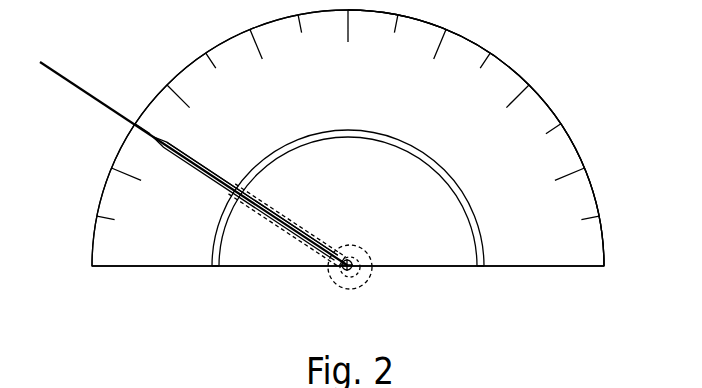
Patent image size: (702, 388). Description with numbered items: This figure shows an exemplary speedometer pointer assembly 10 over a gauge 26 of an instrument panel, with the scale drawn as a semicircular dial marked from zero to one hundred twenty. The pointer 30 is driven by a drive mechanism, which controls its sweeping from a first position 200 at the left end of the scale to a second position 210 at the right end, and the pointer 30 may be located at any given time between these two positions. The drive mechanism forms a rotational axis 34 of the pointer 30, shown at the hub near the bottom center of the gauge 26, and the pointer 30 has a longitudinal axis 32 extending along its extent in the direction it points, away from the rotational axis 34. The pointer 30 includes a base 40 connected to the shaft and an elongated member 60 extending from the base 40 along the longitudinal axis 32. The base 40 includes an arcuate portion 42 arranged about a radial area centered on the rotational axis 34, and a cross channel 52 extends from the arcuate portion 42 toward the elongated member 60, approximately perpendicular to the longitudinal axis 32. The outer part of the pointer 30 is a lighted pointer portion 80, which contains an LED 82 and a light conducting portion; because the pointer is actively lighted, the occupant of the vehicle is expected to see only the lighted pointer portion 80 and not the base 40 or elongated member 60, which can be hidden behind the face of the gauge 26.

The pointer assembly 10 is at (319, 263).
The gauge 26 is at (518, 72).
The pointer 30 is at (223, 166).
The longitudinal axis 32 is at (103, 100).
The rotational axis 34 is at (342, 277).
The base 40 is at (357, 290).
The arcuate portion 42 is at (360, 257).
The cross channel 52 is at (344, 258).
The elongated member 60 is at (265, 207).
The lighted pointer portion 80 is at (185, 153).
The first position 200 is at (114, 217).
The second position 210 is at (595, 214).
The LED 82 is at (692, 368).